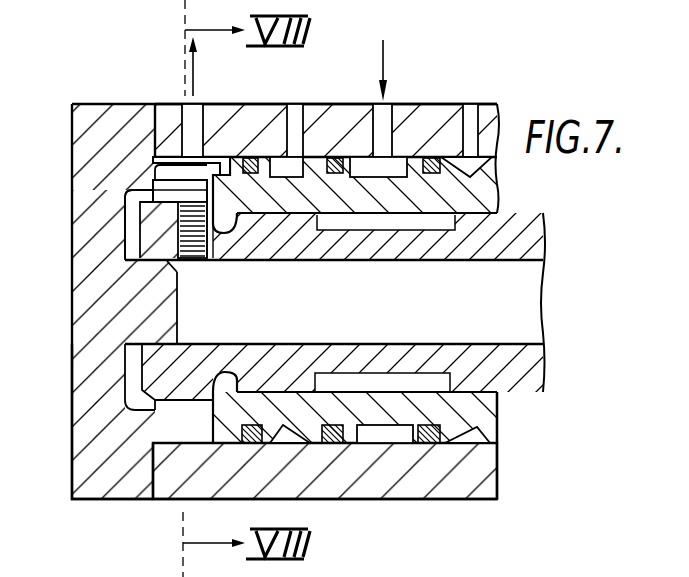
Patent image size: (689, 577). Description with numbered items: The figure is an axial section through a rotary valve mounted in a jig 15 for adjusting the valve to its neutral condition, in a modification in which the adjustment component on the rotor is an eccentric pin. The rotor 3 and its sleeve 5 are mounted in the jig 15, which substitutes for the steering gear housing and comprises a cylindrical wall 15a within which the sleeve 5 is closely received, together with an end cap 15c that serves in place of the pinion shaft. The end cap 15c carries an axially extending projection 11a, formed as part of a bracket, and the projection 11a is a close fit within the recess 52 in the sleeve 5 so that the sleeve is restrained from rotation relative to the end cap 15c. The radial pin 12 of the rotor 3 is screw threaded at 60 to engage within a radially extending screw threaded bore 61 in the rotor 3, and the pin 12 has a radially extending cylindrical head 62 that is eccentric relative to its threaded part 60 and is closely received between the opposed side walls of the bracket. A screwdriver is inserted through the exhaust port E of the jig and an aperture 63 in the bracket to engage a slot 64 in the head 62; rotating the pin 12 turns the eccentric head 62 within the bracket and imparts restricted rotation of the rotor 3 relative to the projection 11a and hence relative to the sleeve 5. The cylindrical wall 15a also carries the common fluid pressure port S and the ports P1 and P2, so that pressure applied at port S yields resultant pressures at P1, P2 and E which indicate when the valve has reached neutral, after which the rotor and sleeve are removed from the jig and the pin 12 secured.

The jig 15 is at (90, 96).
The cylindrical wall 15a is at (472, 470).
The end cap 15c is at (110, 475).
The axially extending projection 11a is at (250, 112).
The aperture 63 is at (180, 157).
The slot 64 is at (190, 173).
The cylindrical head 62 is at (193, 186).
The radial pin 12 is at (125, 202).
The screw threaded part 60 is at (178, 230).
The screw threaded bore 61 is at (217, 253).
The recess 52 is at (241, 157).
The sleeve 5 is at (483, 183).
The rotor 3 is at (358, 250).
The port P1 is at (470, 120).
The port P2 is at (300, 110).
The common fluid pressure port S is at (386, 79).
The common return port E is at (192, 79).